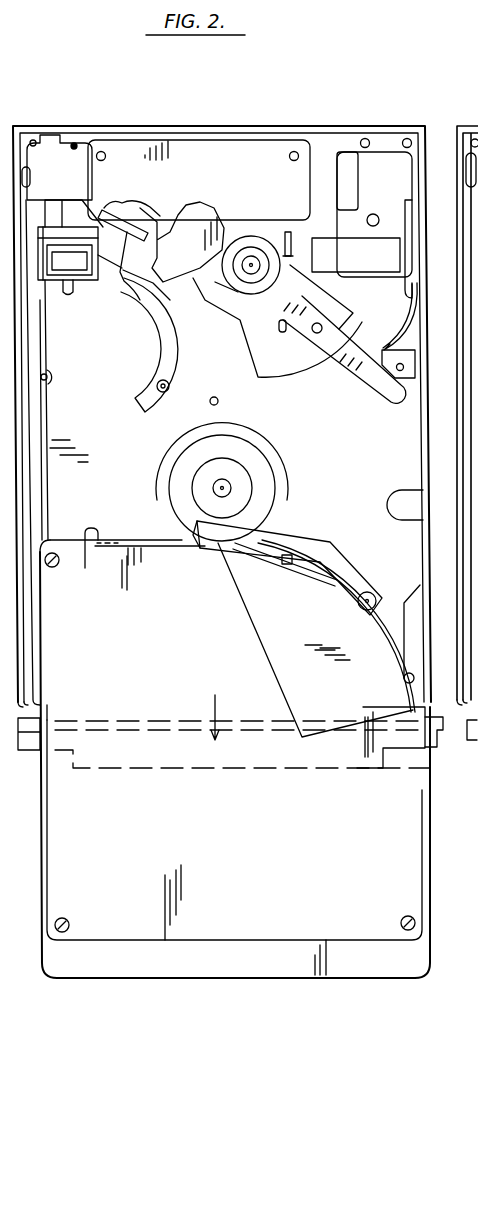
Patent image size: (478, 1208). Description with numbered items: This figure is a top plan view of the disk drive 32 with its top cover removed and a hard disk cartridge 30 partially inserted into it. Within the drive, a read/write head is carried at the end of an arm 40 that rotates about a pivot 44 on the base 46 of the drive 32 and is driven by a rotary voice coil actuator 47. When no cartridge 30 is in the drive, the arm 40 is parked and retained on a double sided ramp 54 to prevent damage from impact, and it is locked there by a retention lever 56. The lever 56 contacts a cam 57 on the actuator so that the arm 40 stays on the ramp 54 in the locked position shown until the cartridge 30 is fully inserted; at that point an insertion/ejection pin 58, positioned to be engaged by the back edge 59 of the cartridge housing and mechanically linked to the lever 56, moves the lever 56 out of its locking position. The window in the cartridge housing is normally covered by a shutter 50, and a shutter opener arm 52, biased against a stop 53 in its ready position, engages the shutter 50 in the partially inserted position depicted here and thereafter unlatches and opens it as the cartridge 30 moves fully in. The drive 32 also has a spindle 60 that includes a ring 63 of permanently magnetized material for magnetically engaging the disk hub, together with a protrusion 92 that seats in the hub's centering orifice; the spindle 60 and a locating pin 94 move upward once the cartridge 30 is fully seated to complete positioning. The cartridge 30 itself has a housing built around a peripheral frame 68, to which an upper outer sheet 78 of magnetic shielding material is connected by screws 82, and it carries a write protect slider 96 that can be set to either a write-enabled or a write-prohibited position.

The hard disk cartridge 30 is at (172, 985).
The disk drive 32 is at (292, 122).
The arm 40 is at (340, 360).
The pivot 44 is at (250, 262).
The base 46 is at (132, 450).
The rotary voice coil actuator 47 is at (190, 220).
The shutter 50 is at (273, 610).
The shutter opener arm 52 is at (328, 533).
The stop 53 is at (283, 557).
The double sided ramp 54 is at (368, 387).
The retention lever 56 is at (287, 238).
The cam 57 is at (278, 232).
The insertion/ejection pin 58 is at (157, 383).
The back edge 59 is at (140, 538).
The spindle 60 is at (248, 456).
The ring 63 is at (265, 488).
The peripheral frame 68 is at (386, 975).
The upper outer sheet 78 is at (430, 773).
The screw 82 is at (416, 916).
The protrusion 92 is at (232, 487).
The locating pin 94 is at (219, 401).
The write protect slider 96 is at (213, 700).